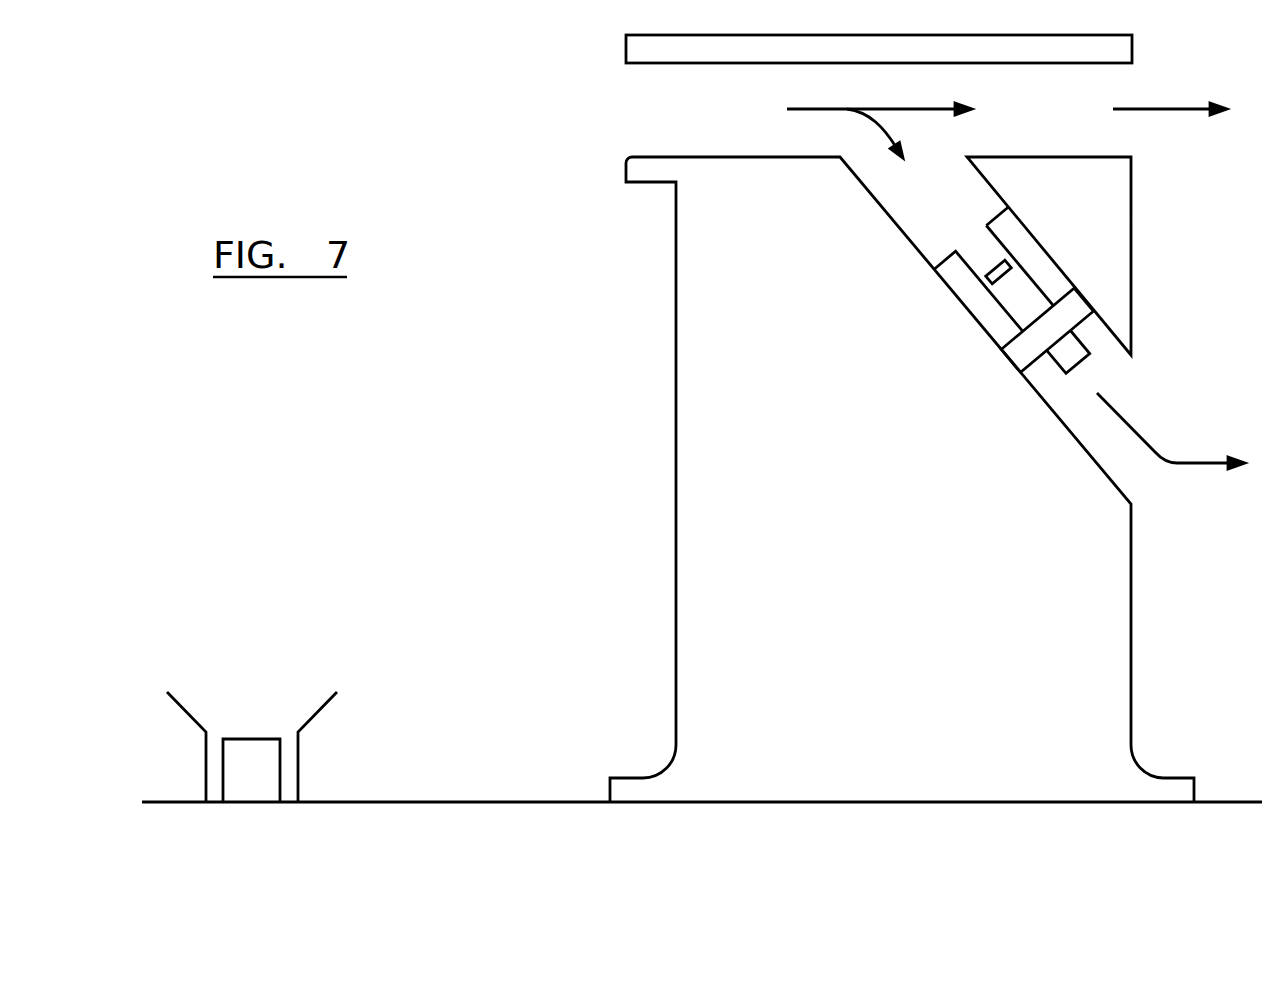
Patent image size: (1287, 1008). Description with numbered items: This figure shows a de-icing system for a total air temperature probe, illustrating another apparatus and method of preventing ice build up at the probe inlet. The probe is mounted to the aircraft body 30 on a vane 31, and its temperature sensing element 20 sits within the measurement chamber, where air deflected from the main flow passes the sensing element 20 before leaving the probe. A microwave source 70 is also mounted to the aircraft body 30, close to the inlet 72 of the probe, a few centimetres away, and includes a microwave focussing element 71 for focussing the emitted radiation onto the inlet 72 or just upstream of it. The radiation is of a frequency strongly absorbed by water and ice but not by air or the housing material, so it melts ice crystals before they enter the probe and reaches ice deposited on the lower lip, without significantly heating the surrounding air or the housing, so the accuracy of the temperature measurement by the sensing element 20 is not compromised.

The inlet 72 is at (657, 115).
The vane 31 is at (728, 428).
The temperature sensing element 20 is at (1007, 267).
The aircraft body 30 is at (926, 803).
The microwave source 70 is at (252, 777).
The microwave focussing element 71 is at (323, 710).